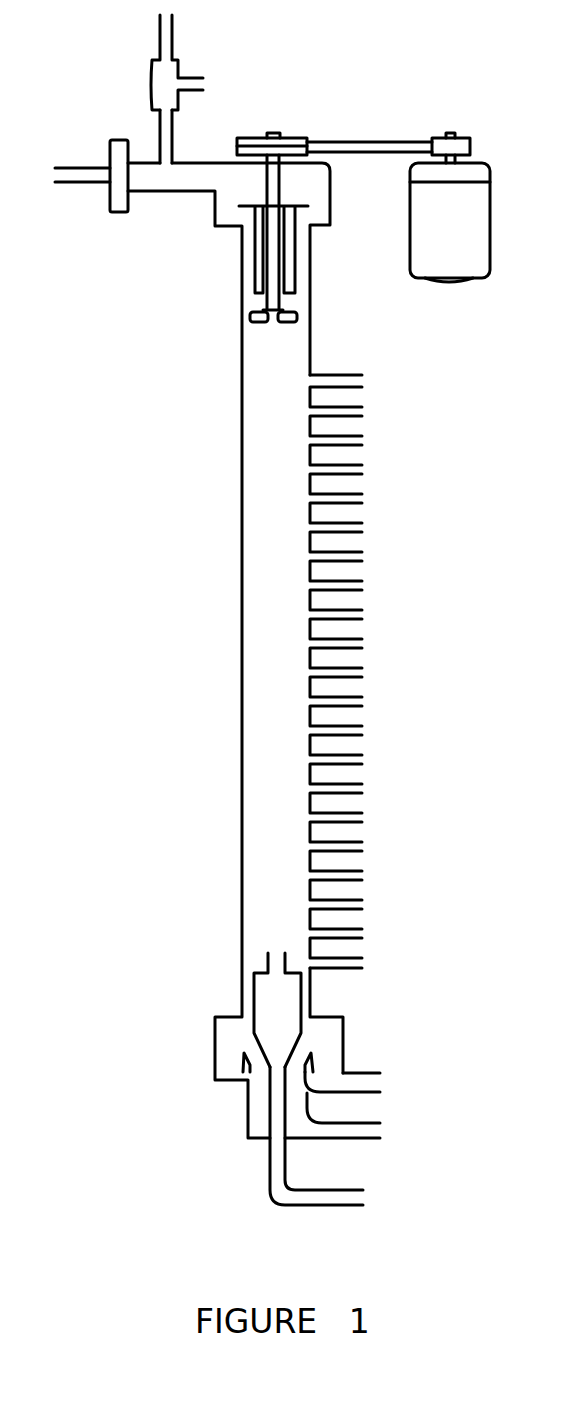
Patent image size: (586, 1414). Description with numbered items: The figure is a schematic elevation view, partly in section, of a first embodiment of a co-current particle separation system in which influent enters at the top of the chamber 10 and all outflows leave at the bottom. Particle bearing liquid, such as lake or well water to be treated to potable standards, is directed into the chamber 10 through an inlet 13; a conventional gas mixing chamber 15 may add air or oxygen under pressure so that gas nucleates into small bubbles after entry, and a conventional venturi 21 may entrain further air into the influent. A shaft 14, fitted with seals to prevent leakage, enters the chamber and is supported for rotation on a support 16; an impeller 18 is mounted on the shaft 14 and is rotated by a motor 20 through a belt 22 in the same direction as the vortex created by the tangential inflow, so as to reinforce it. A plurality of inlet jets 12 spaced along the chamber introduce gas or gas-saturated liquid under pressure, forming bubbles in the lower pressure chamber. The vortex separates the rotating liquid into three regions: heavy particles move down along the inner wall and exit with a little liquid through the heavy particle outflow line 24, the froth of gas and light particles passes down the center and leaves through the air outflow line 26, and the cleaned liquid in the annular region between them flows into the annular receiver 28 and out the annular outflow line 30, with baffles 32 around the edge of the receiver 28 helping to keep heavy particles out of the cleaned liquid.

The chamber 10 is at (242, 723).
The inlet jets 12 is at (352, 375).
The inlet 13 is at (168, 195).
The shaft 14 is at (266, 190).
The gas mixing chamber 15 is at (118, 140).
The support 16 is at (255, 262).
The impeller 18 is at (264, 319).
The motor 20 is at (490, 210).
The venturi 21 is at (180, 70).
The belt 22 is at (373, 142).
The heavy particle outflow line 24 is at (367, 1073).
The air outflow line 26 is at (337, 1207).
The annular receiver 28 is at (298, 1052).
The annular outflow line 30 is at (352, 1141).
The baffles 32 is at (243, 1063).